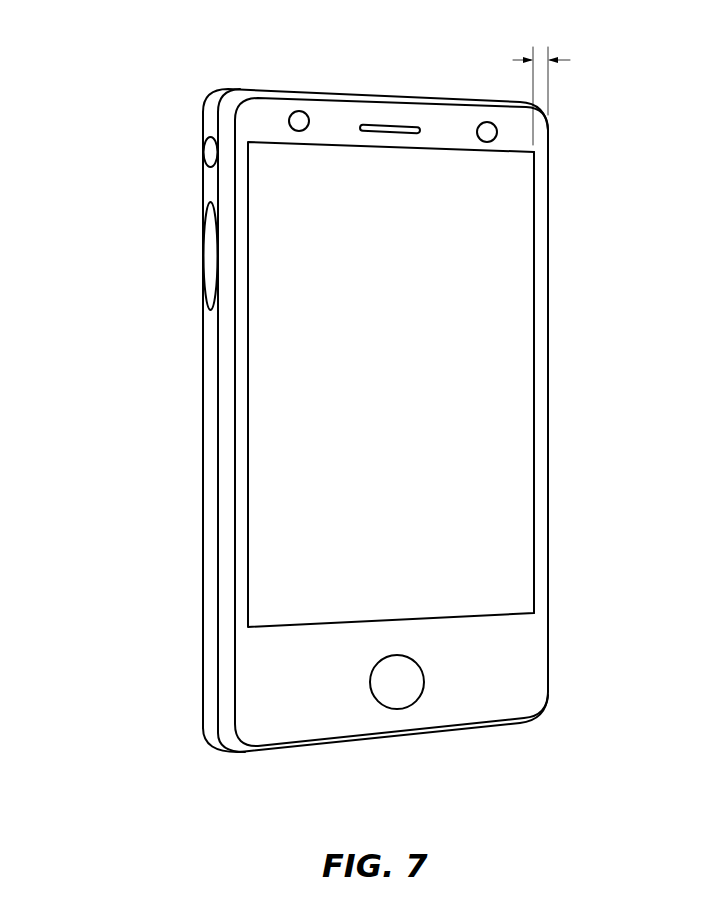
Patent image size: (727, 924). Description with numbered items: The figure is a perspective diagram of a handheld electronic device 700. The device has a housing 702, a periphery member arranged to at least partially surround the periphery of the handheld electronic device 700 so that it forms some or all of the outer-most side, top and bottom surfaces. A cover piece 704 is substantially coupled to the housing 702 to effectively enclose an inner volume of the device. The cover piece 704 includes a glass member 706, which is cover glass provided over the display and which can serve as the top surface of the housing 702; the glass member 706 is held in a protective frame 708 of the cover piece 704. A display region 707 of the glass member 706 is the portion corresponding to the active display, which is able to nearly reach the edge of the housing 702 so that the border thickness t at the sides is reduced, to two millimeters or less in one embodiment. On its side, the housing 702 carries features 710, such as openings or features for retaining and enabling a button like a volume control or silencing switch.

The handheld electronic device 700 is at (157, 40).
The housing 702 is at (208, 633).
The cover piece 704 is at (218, 570).
The glass member 706 is at (499, 320).
The display region 707 is at (515, 511).
The protective frame 708 is at (227, 540).
The features 710 is at (207, 153).